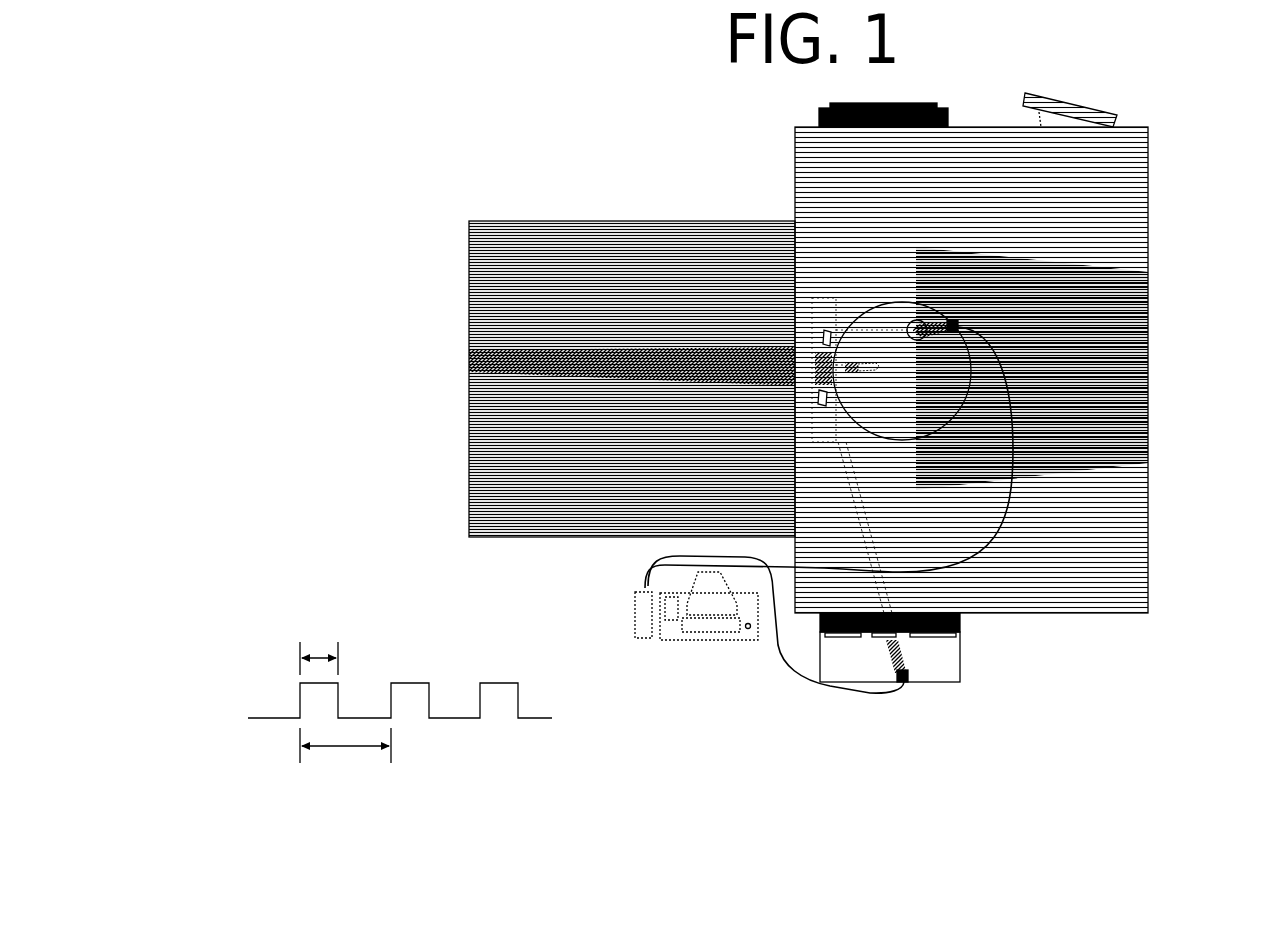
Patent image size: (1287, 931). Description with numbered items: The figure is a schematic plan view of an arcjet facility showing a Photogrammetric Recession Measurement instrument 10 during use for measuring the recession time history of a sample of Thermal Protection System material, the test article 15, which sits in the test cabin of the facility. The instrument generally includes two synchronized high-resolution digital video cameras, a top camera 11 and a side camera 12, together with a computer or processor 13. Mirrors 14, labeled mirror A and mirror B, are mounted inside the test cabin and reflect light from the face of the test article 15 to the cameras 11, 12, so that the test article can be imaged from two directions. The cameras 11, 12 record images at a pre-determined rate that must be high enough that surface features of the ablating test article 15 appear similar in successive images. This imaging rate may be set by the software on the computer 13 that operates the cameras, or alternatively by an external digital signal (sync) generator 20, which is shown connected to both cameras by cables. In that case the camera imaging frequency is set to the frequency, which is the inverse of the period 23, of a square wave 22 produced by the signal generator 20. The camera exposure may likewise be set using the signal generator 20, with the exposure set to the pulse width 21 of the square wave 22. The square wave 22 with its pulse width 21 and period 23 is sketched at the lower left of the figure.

The Photogrammetric Recession Measurement (PRM) instrument 10 is at (1020, 496).
The top camera 11 is at (960, 314).
The side camera 12 is at (910, 664).
The computer or processor 13 is at (641, 624).
The mirrors 14 is at (810, 402).
The test article 15 is at (854, 374).
The digital signal (sync) generator 20 is at (673, 621).
The pulse width 21 is at (320, 616).
The square wave 22 is at (421, 737).
The period 23 is at (345, 779).